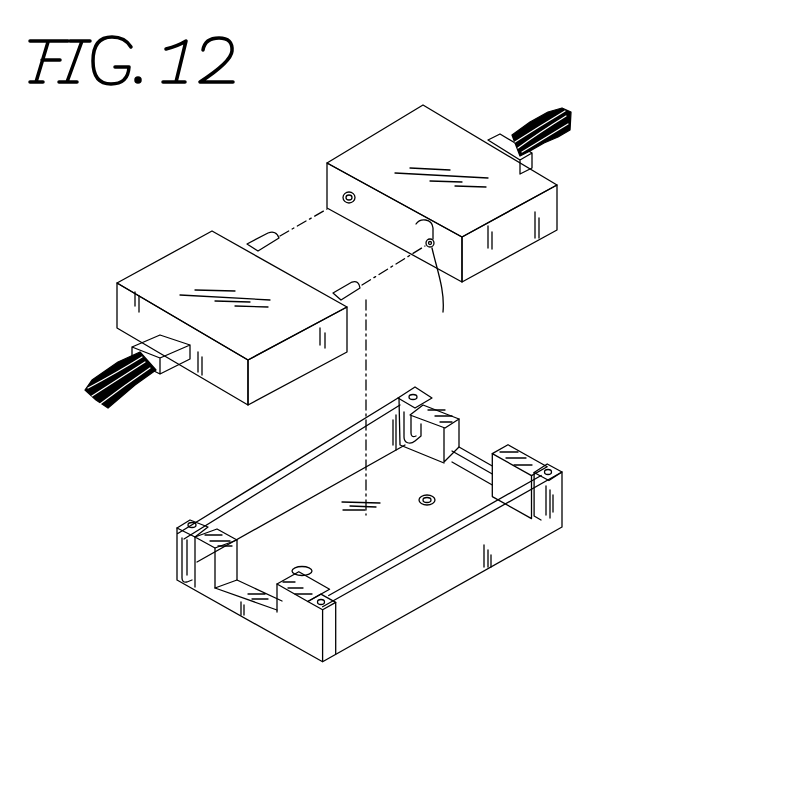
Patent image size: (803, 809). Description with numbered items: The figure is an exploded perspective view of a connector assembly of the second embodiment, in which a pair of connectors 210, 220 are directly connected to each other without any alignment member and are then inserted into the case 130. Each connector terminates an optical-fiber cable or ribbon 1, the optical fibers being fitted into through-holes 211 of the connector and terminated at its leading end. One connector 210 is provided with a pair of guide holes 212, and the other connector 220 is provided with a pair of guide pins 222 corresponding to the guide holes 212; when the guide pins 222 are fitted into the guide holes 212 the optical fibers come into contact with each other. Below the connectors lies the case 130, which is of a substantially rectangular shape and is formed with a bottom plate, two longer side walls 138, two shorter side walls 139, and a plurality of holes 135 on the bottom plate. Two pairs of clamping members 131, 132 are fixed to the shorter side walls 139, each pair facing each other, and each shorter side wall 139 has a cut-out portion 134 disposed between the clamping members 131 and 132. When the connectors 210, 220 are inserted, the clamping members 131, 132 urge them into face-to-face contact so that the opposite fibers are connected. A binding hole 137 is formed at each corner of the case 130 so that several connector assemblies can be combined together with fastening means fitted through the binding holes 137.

The optical-fiber cables or ribbons 1 is at (542, 120).
The case 130 is at (376, 515).
The clamping member 131 is at (528, 464).
The clamping member 132 is at (430, 391).
The cut-out portion 134 is at (238, 597).
The holes 135 is at (430, 498).
The binding hole 137 is at (549, 465).
The longer side wall 138 is at (447, 567).
The shorter side wall 139 is at (515, 449).
The connector 210 is at (401, 113).
The through-holes 211 is at (378, 212).
The guide holes 212 is at (465, 233).
The connector 220 is at (156, 266).
The guide pins 222 is at (263, 240).